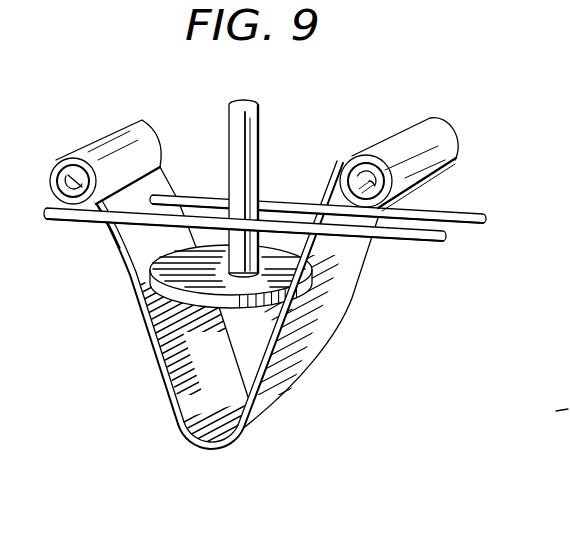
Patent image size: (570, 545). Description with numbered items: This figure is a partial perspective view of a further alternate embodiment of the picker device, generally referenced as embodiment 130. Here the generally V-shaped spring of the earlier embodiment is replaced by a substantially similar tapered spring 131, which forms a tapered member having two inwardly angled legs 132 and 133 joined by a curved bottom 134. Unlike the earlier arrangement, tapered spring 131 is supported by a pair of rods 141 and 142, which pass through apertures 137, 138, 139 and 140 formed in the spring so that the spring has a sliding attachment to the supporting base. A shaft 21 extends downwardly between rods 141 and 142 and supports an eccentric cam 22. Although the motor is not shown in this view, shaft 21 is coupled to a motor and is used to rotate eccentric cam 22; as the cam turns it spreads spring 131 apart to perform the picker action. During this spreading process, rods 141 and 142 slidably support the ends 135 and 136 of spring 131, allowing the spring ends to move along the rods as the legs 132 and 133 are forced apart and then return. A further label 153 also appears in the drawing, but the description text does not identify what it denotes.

The shaft 21 is at (257, 143).
The eccentric cam 22 is at (177, 283).
The picker device embodiment 130 is at (254, 335).
The tapered spring 131 is at (165, 405).
The inwardly angled leg 132 is at (297, 353).
The inwardly angled leg 133 is at (177, 334).
The curved bottom 134 is at (210, 450).
The spring end 135 is at (130, 127).
The spring end 136 is at (407, 140).
The aperture 137 is at (121, 229).
The aperture 138 is at (167, 198).
The aperture 139 is at (333, 222).
The aperture 140 is at (384, 204).
The rod 141 is at (441, 239).
The rod 142 is at (485, 216).
The lead 153 is at (540, 411).